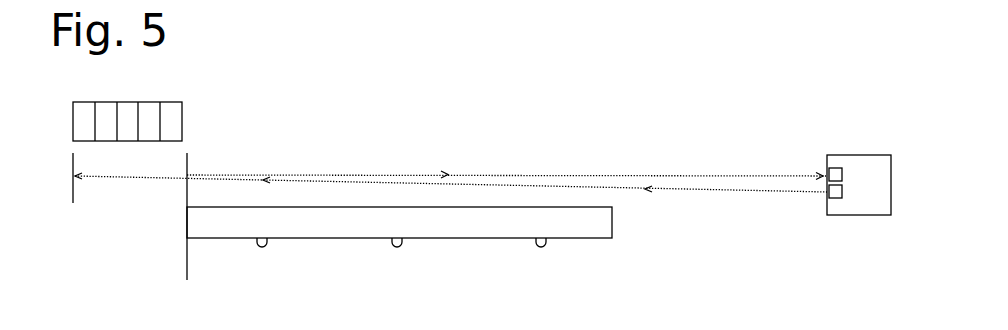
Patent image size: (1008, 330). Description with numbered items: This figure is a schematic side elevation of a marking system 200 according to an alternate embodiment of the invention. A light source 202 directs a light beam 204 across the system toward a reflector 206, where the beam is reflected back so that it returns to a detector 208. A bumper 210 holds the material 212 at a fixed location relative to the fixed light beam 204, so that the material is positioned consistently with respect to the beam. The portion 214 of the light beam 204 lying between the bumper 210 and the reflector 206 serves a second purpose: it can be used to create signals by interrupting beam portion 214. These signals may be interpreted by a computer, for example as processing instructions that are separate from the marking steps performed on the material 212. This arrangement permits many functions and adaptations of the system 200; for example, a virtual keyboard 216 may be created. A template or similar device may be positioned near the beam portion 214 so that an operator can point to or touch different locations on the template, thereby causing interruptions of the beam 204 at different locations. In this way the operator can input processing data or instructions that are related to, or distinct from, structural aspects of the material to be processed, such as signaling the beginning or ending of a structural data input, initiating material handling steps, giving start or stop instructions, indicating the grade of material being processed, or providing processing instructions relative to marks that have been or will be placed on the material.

The marking system 200 is at (699, 127).
The light source 202 is at (843, 192).
The light beam 204 is at (745, 193).
The reflector 206 is at (72, 193).
The detector 208 is at (843, 176).
The bumper 210 is at (185, 265).
The material 212 is at (518, 239).
The portion of light beam 214 is at (133, 178).
The virtual keyboard 216 is at (85, 102).